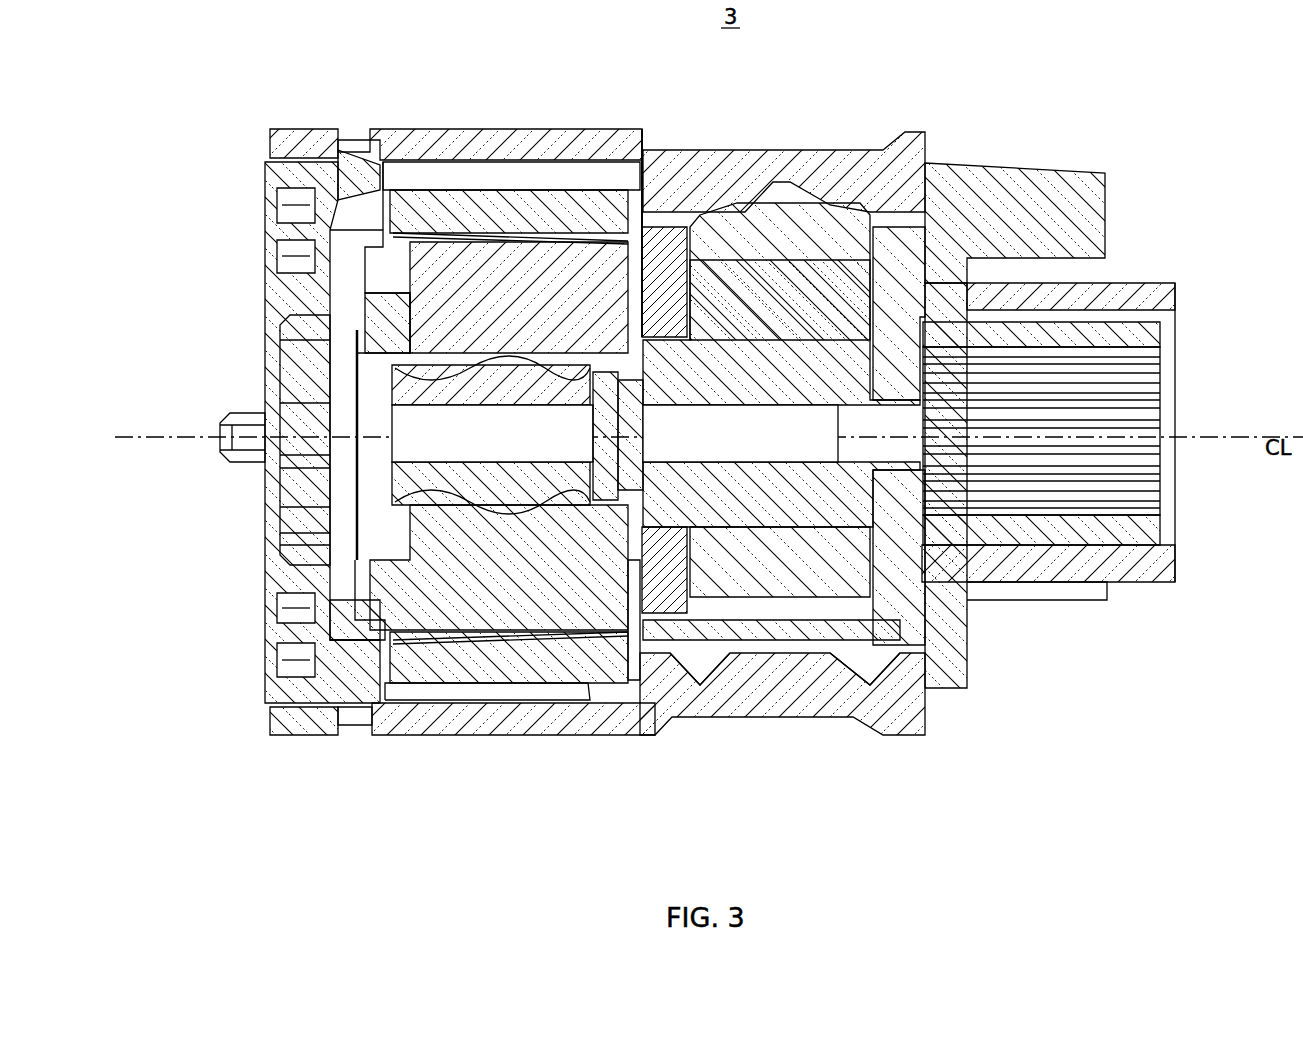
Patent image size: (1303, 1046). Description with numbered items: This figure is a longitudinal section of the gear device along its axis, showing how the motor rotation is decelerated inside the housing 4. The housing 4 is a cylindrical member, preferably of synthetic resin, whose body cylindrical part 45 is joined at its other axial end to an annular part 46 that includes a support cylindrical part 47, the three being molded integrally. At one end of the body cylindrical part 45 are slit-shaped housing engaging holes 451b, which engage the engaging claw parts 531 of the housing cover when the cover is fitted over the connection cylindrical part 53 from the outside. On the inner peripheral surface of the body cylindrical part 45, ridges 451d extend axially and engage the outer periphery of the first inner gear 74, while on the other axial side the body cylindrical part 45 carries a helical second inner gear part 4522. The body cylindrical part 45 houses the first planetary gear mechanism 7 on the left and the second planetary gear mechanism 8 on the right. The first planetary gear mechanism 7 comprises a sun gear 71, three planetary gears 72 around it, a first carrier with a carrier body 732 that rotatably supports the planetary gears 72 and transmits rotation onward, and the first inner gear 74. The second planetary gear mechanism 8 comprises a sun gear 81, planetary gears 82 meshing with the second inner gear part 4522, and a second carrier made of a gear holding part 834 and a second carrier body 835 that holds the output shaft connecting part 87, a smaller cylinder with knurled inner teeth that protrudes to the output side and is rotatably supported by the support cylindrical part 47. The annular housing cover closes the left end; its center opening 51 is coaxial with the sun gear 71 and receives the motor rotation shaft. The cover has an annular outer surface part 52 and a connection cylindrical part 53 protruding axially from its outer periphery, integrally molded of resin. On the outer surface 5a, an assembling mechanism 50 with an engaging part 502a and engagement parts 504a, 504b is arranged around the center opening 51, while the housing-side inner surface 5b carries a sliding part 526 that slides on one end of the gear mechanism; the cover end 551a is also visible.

The housing 4 is at (862, 152).
The body cylindrical part 45 is at (700, 160).
The annular part 46 is at (952, 635).
The support cylindrical part 47 is at (1060, 567).
The housing engaging hole 451b is at (375, 710).
The ridge 451d is at (447, 200).
The second inner gear part 4522 is at (770, 673).
The outer surface 5a is at (268, 312).
The housing cover inner surface 5b is at (340, 690).
The assembling mechanism 50 is at (270, 245).
The center opening 51 is at (311, 62).
The outer surface part 52 is at (268, 158).
The connection cylindrical part 53 is at (330, 170).
The sliding part 526 is at (355, 345).
The engaging claw part 531 is at (358, 718).
The cover end 551a is at (303, 718).
The engaging part 502a is at (220, 447).
The engagement part 504a is at (290, 615).
The engagement part 504b is at (275, 225).
The first planetary gear mechanism 7 is at (644, 160).
The sun gear 71 is at (560, 570).
The planetary gear 72 is at (527, 590).
The carrier body 732 is at (617, 570).
The first inner gear 74 is at (445, 205).
The second planetary gear mechanism 8 is at (893, 217).
The sun gear 81 is at (777, 487).
The planetary gear 82 is at (732, 298).
The gear holding part 834 is at (667, 567).
The second carrier body 835 is at (900, 555).
The output shaft connecting part 87 is at (1065, 340).